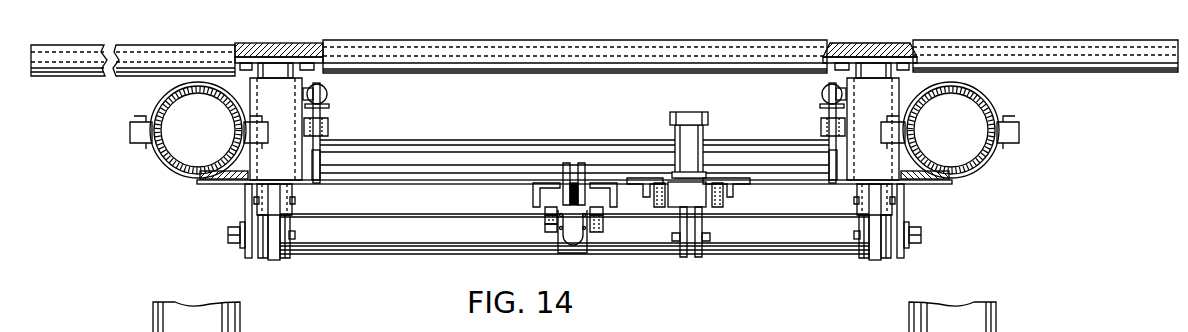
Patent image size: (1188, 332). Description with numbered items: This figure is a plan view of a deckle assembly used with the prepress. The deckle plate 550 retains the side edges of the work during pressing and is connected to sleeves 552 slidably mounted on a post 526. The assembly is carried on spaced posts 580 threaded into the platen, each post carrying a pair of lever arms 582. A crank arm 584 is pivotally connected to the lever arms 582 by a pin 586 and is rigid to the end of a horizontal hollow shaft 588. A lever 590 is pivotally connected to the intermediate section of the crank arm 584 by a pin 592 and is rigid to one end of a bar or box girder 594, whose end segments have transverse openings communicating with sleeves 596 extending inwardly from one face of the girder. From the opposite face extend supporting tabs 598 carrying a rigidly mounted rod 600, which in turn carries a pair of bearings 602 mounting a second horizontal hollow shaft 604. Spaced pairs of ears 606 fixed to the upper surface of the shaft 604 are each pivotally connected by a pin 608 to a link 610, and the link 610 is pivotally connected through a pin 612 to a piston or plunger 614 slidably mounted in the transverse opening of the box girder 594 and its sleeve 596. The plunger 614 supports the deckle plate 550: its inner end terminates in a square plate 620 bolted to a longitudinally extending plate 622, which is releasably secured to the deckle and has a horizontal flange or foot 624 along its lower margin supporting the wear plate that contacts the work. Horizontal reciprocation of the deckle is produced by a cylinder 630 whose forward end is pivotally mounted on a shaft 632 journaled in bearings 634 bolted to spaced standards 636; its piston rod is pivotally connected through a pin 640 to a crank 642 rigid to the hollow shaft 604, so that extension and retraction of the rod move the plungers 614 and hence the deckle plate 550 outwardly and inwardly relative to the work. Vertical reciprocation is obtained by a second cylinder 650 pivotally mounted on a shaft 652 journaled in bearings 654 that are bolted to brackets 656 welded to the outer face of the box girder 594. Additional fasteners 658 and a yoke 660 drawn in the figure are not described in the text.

The deckle plate 550 is at (153, 43).
The horizontal flange or foot 624 is at (80, 77).
The longitudinally extending plate 622 is at (263, 44).
The square plate 620 is at (302, 44).
The piston or plunger 614 is at (275, 70).
The sleeve 596 is at (280, 128).
The post 580 is at (320, 83).
The lever arm 582 is at (328, 91).
The pin 586 is at (322, 105).
The crank arm 584 is at (322, 115).
The pin 592 is at (327, 128).
The lever 590 is at (325, 152).
The horizontal hollow shaft 588 is at (443, 157).
The bar or box girder 594 is at (570, 140).
The sleeve 552 is at (162, 165).
The post 526 is at (155, 98).
The supporting tab 598 is at (247, 200).
The rod 600 is at (230, 230).
The bearing 602 is at (245, 240).
The ear 606 is at (263, 260).
The link 610 is at (272, 260).
The pin 608 is at (290, 235).
The horizontal hollow shaft 604 is at (418, 242).
The pin 612 is at (293, 202).
The cylinder 630 is at (703, 133).
The shaft 632 is at (687, 194).
The bearing 634 is at (680, 175).
The standard 636 is at (650, 192).
The pin 640 is at (710, 237).
The crank 642 is at (695, 258).
The cylinder 650 is at (577, 240).
The shaft 652 is at (545, 222).
The bearing 654 is at (545, 229).
The bracket 656 is at (614, 178).
The bolt 658 is at (545, 203).
The yoke 660 is at (580, 167).